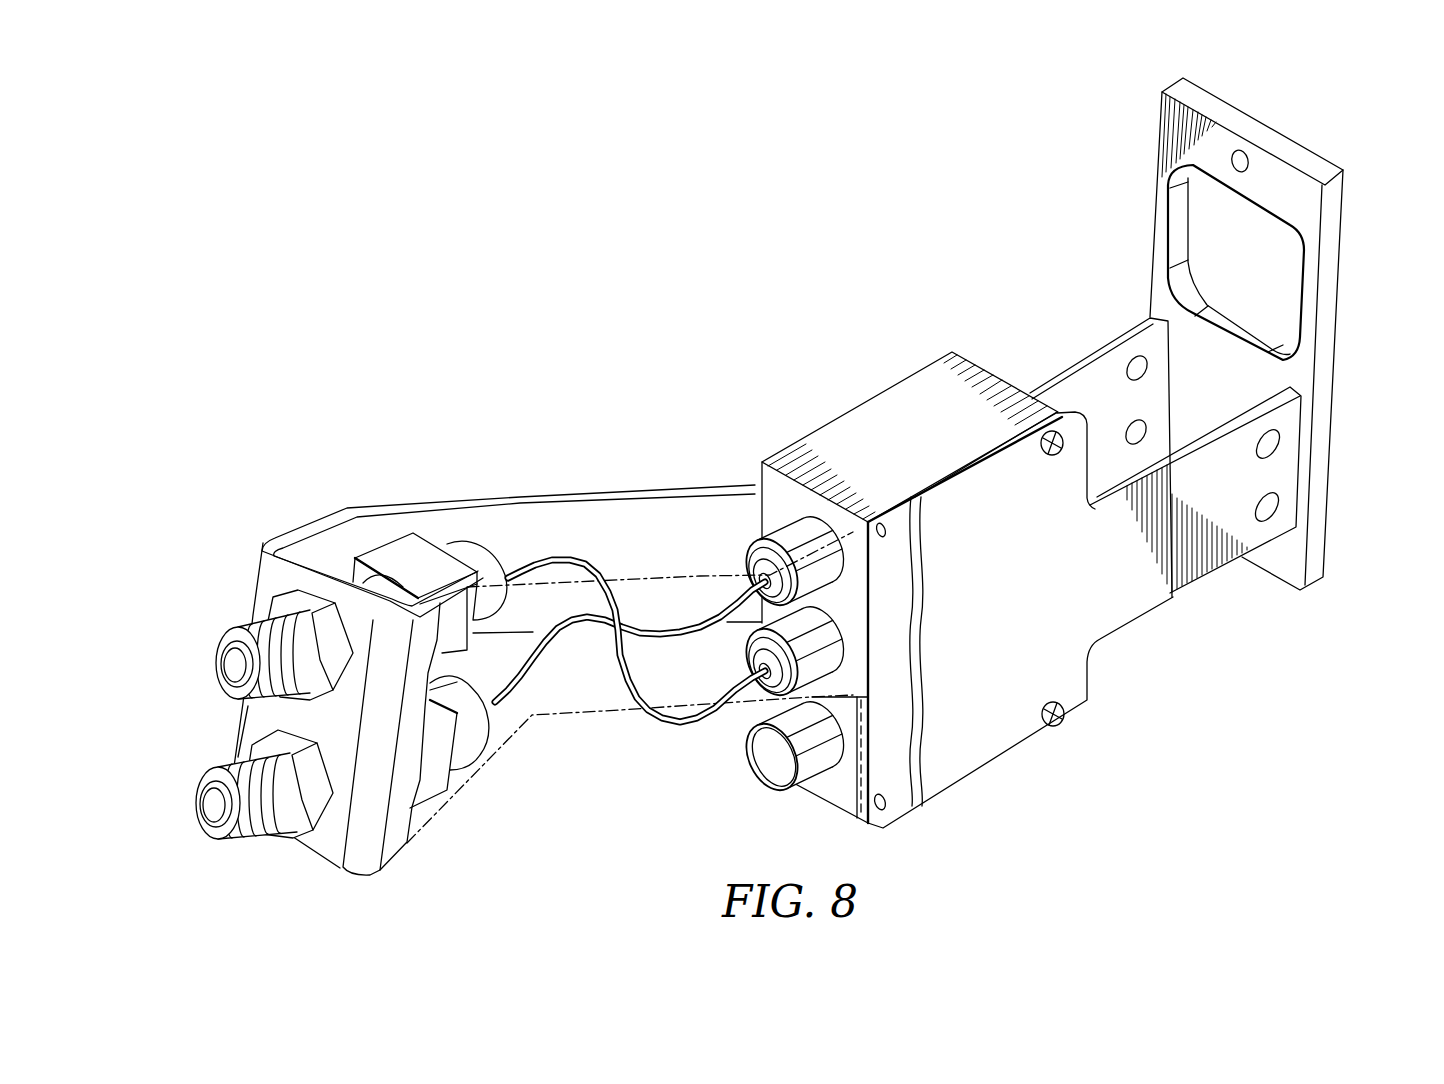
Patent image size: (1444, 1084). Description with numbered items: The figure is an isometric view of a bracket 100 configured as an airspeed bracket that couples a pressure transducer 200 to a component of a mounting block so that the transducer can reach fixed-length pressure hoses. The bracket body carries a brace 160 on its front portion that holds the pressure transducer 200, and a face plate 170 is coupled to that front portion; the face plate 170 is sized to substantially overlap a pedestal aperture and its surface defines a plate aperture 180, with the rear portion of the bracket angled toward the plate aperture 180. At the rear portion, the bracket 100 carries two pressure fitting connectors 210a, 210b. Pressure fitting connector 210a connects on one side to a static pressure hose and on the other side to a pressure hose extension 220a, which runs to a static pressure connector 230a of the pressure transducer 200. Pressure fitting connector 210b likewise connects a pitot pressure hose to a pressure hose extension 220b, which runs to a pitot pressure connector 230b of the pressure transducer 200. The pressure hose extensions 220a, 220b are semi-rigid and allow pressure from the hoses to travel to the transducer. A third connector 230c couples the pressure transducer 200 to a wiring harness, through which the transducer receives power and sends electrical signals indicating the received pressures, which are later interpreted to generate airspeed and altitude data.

The bracket 100 is at (620, 305).
The brace 160 is at (1088, 703).
The face plate 170 is at (1336, 436).
The plate aperture 180 is at (1257, 273).
The pressure transducer 200 is at (875, 408).
The pressure fitting connector 210a is at (220, 650).
The pressure fitting connector 210b is at (198, 813).
The pressure hose extension 220a is at (656, 725).
The pressure hose extension 220b is at (515, 712).
The static pressure connector 230a is at (746, 660).
The pitot pressure connector 230b is at (753, 552).
The connector 230c is at (780, 778).